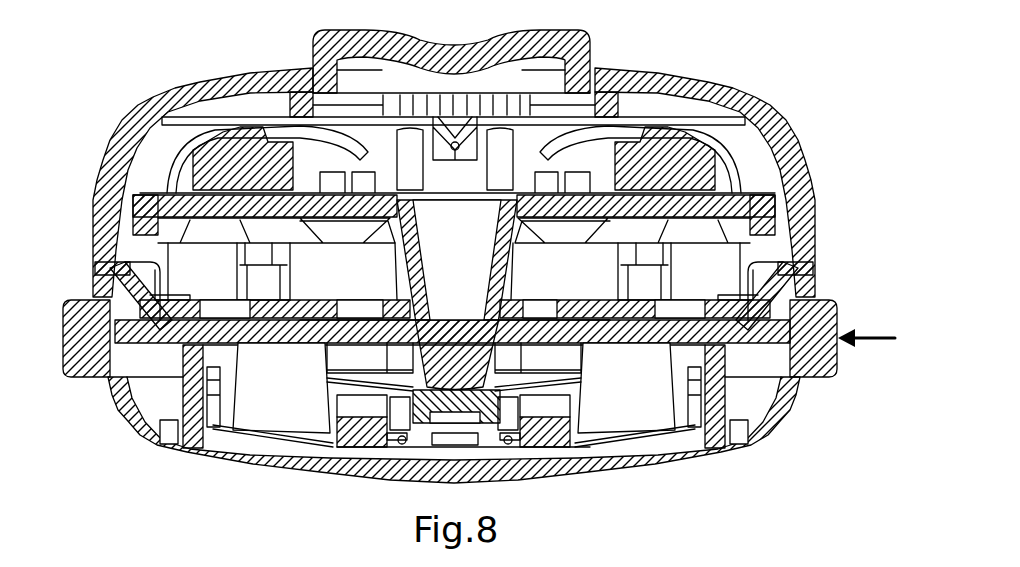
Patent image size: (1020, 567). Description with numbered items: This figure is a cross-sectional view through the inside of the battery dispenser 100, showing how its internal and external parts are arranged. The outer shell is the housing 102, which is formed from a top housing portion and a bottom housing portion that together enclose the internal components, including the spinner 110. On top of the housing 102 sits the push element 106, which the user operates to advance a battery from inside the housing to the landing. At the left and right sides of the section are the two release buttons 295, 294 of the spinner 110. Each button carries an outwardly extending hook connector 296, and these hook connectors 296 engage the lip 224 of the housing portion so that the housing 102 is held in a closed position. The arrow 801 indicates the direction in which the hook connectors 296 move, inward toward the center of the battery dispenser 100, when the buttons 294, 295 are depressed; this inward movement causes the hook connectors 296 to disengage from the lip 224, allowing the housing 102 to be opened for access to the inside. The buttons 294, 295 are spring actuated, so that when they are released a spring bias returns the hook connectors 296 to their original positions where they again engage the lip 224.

The battery dispenser 100 is at (116, 76).
The housing 102 is at (688, 90).
The push element 106 is at (584, 28).
The spinner 110 is at (52, 374).
The lip 224 is at (93, 272).
The release button 294 is at (813, 315).
The release button 295 is at (66, 322).
The hook connector 296 is at (93, 262).
The arrow 801 is at (877, 341).